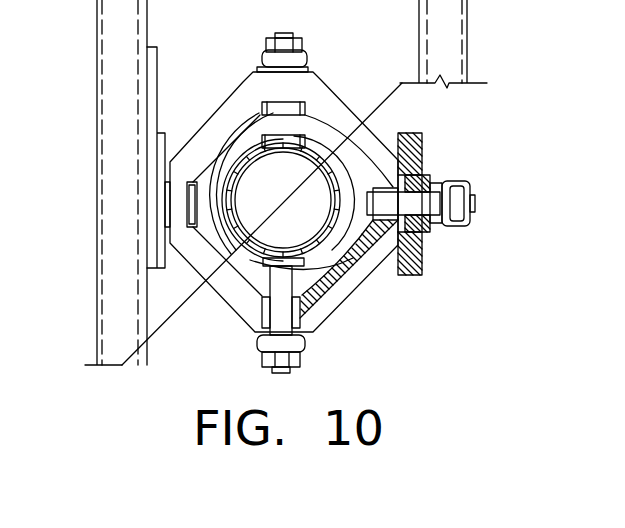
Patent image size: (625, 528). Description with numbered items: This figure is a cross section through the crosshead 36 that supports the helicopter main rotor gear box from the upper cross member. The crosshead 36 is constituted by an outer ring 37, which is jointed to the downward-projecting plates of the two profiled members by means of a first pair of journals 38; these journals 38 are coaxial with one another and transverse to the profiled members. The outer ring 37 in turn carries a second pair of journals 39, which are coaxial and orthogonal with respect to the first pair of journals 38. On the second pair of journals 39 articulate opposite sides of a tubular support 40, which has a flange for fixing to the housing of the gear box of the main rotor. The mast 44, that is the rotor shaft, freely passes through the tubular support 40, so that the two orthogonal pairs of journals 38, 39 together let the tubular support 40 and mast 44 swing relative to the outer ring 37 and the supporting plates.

The crosshead 36 is at (352, 104).
The outer ring 37 is at (242, 107).
The first pair of journals 38 is at (165, 200).
The second pair of journals 39 is at (290, 108).
The tubular support 40 is at (315, 262).
The mast 44 is at (248, 168).